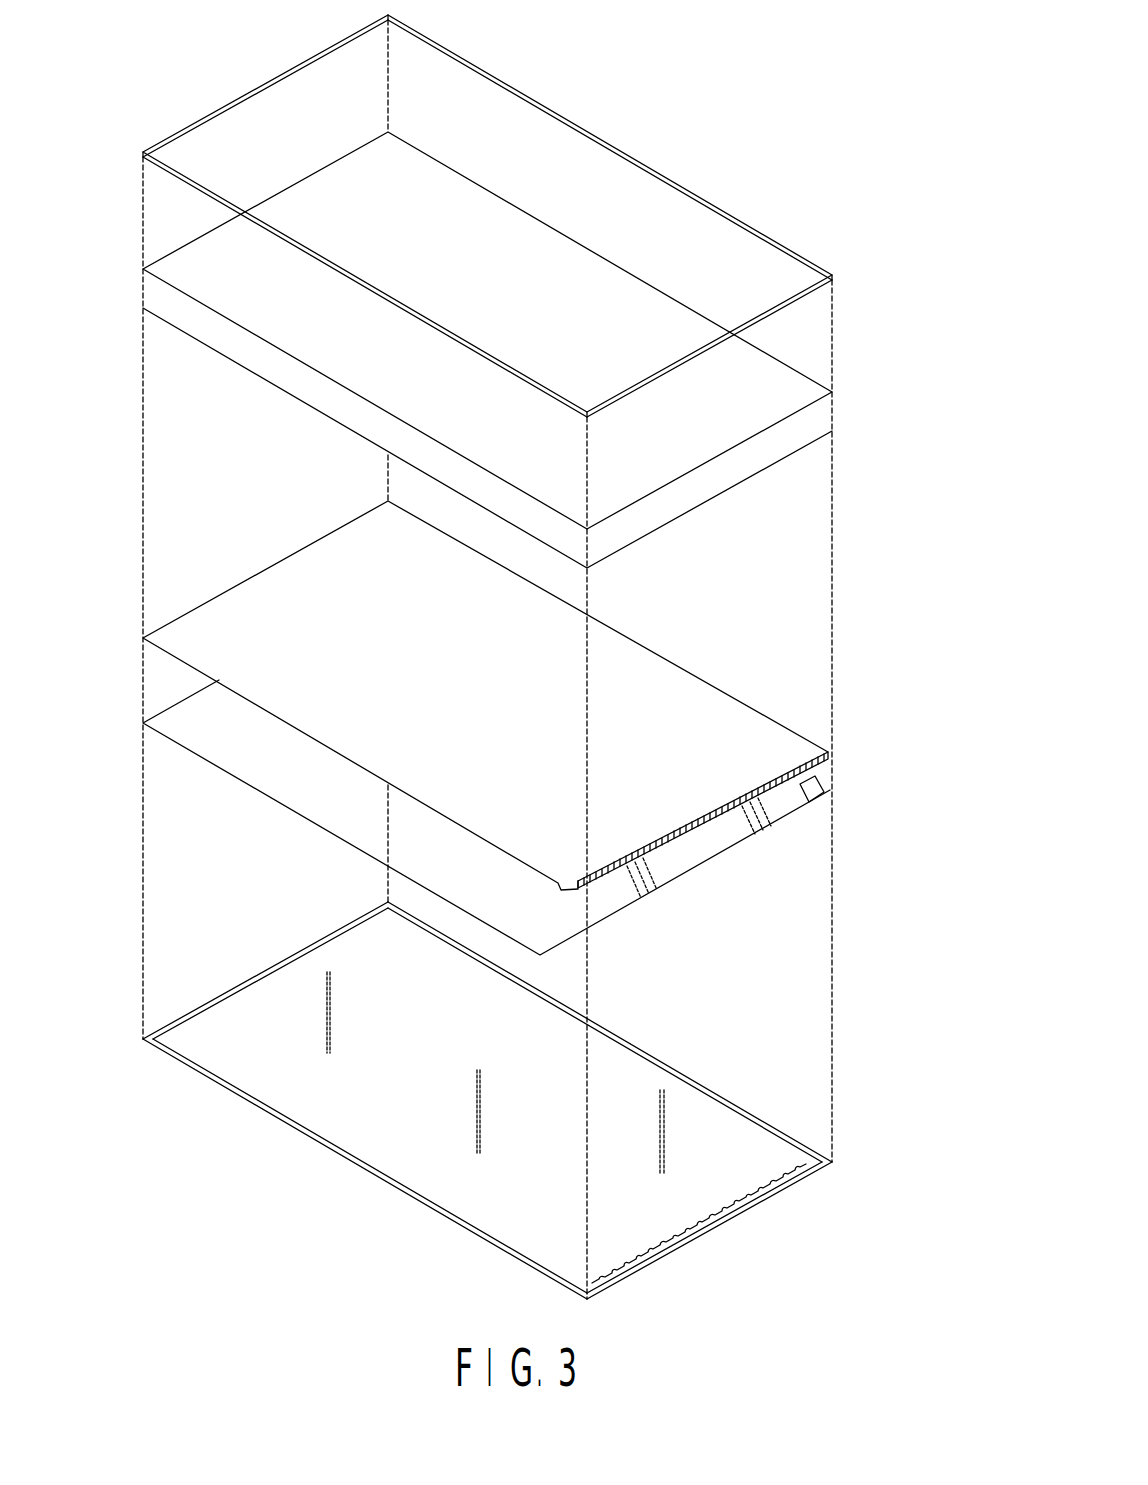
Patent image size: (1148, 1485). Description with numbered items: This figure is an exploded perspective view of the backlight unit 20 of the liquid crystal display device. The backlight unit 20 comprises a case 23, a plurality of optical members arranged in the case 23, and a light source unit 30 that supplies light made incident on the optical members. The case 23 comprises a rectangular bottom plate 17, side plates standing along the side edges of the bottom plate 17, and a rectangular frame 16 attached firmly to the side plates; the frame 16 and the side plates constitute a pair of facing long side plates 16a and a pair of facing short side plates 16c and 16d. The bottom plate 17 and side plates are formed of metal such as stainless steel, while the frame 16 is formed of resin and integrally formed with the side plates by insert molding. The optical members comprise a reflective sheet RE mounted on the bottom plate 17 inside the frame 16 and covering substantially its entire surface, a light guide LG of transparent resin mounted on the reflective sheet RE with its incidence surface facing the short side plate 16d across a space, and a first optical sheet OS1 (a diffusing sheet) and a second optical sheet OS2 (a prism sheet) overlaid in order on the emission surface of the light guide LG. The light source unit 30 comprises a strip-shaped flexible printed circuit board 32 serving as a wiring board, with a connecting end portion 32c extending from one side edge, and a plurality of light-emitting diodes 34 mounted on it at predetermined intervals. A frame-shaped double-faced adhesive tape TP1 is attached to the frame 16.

The double-faced adhesive tape TP1 is at (566, 119).
The second optical sheet OS2 is at (178, 267).
The first optical sheet OS1 is at (163, 312).
The light guide LG is at (343, 735).
The reflective sheet RE is at (262, 773).
The backlight unit 20 is at (859, 694).
The light source unit 30 is at (741, 837).
The flexible printed circuit board 32 is at (741, 820).
The connecting end portion 32c is at (830, 778).
The light-emitting diodes 34 is at (766, 830).
The frame 16 is at (487, 1100).
The long side plate 16a is at (644, 1050).
The short side plate 16c is at (258, 973).
The short side plate 16d is at (718, 1227).
The bottom plate 17 is at (297, 1103).
The case 23 is at (487, 1100).